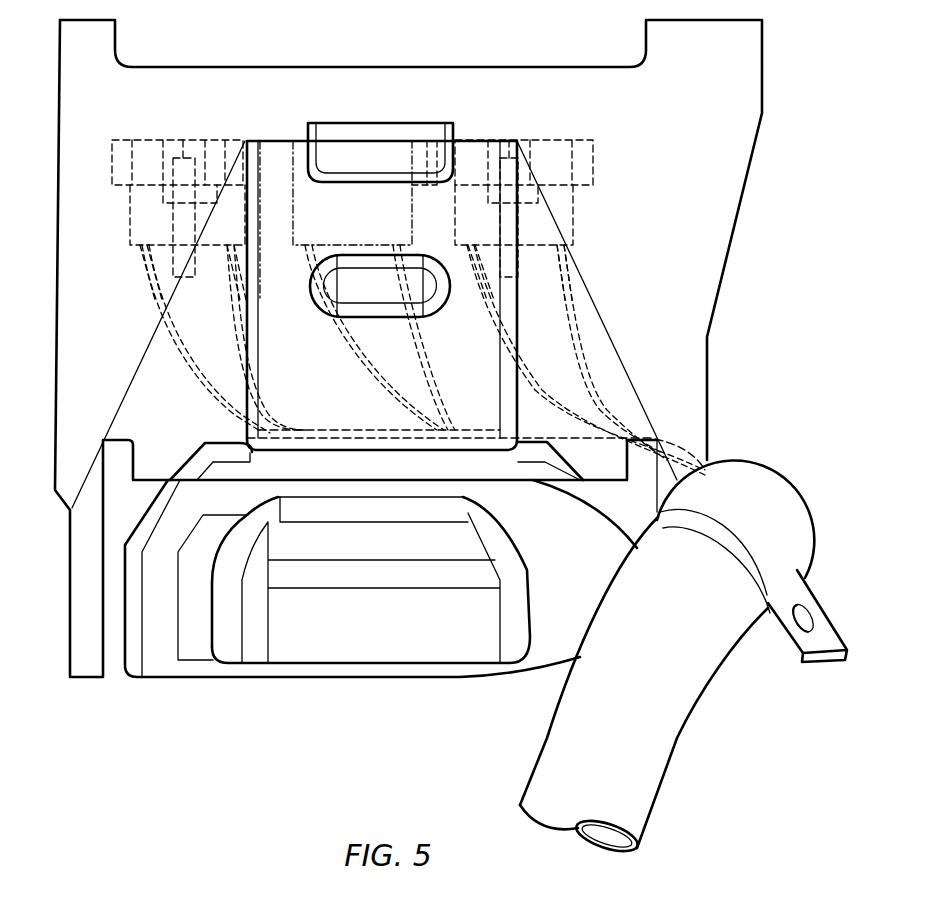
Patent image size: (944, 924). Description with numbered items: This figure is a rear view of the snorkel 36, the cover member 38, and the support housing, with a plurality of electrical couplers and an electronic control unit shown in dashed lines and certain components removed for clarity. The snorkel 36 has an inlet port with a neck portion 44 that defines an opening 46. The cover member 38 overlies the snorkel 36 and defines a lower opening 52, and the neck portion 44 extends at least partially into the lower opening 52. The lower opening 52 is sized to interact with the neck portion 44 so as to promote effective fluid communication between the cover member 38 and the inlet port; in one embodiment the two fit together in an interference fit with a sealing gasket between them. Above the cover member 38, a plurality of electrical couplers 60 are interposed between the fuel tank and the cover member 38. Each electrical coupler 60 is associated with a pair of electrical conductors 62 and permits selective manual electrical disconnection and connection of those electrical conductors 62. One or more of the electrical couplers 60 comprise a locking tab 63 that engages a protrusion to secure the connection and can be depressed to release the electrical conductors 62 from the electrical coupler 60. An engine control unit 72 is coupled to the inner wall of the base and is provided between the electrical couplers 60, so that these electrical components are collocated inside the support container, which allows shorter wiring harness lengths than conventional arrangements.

The snorkel 36 is at (360, 637).
The cover member 38 is at (607, 466).
The neck portion 44 is at (373, 483).
The opening 46 is at (321, 438).
The lower opening 52 is at (236, 483).
The electrical coupler 60 is at (227, 150).
The electrical conductors 62 is at (237, 343).
The locking tab 63 is at (173, 262).
The engine control unit 72 is at (422, 155).